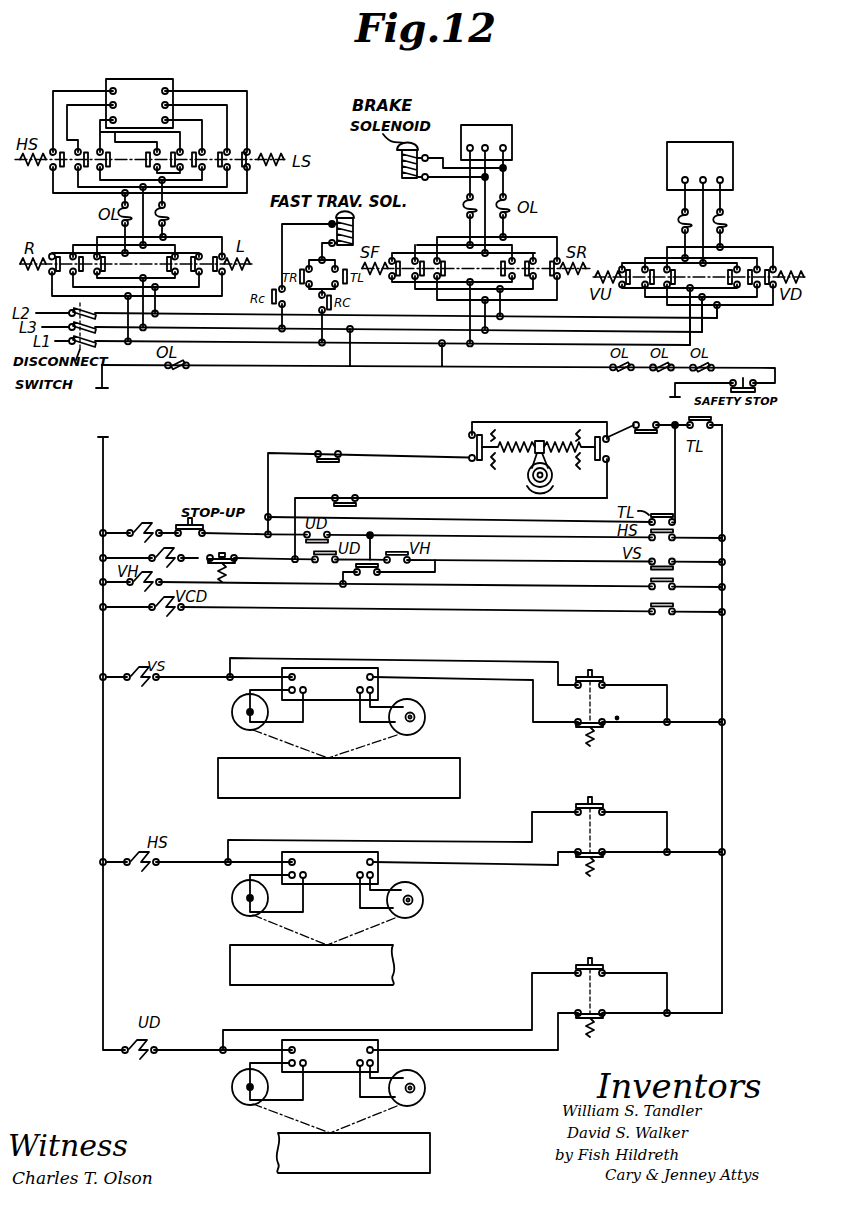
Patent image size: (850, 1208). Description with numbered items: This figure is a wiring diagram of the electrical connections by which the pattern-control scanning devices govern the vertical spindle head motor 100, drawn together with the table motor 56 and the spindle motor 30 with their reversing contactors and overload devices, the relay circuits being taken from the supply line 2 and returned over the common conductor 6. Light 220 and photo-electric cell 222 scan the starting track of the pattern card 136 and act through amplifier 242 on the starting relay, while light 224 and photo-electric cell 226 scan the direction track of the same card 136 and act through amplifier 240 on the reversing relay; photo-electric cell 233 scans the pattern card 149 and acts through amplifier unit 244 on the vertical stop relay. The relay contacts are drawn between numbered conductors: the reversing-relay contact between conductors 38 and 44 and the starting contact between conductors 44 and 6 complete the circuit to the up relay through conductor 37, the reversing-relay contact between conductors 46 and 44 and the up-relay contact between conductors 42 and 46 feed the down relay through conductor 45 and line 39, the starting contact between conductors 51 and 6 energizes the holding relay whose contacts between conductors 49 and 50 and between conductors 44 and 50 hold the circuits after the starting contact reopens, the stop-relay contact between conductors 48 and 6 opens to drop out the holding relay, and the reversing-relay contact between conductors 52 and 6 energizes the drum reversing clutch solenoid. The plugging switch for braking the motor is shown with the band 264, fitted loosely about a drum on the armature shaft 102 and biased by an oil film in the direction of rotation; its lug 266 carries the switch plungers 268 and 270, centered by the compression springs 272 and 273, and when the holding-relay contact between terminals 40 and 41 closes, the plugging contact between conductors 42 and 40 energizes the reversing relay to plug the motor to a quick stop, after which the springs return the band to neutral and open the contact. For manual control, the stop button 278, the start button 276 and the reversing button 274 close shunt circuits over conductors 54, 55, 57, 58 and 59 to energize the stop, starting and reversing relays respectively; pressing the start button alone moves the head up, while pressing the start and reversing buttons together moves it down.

The electric motor 56 is at (137, 80).
The electric motor 30 is at (487, 130).
The electric motor 100 is at (707, 150).
The lug 266 is at (533, 422).
The compression spring 272 is at (517, 440).
The switch plunger 268 is at (492, 440).
The switch plunger 270 is at (592, 440).
The compression spring 273 is at (566, 437).
The band 264 is at (527, 484).
The armature shaft 102 is at (553, 481).
The contact terminal 40 is at (614, 432).
The contact terminal 41 is at (675, 425).
The conductor 6 is at (707, 708).
The supply conductor 2 is at (111, 744).
The VU switch contact 37 is at (153, 523).
The conductor 38 is at (236, 528).
The conductor with VD contact 39 is at (417, 460).
The conductor 42 is at (417, 504).
The conductor 44 is at (482, 550).
The VD switch contact 45 is at (175, 556).
The conductor 46 is at (251, 562).
The conductor 48 is at (543, 556).
The conductor 49 is at (405, 592).
The conductor 50 is at (401, 572).
The conductor 51 is at (624, 581).
The conductor 52 is at (451, 605).
The conductor 54 is at (367, 665).
The conductor 55 is at (475, 699).
The pinion 57 is at (475, 848).
The armature shaft 58 is at (366, 1003).
The large gear 59 is at (475, 1021).
The photo-electric cell 233 is at (236, 719).
The amplifier unit 244 is at (330, 684).
The pattern card 149 is at (339, 778).
The stop button 278 is at (591, 677).
The start button 276 is at (591, 804).
The reversing button 274 is at (591, 965).
The amplifier 242 is at (330, 868).
The photo-electric cell 222 is at (236, 909).
The light 220 is at (421, 909).
The pattern card 136 is at (330, 1059).
The amplifier 240 is at (330, 1056).
The photo-electric cell 226 is at (236, 1099).
The light 224 is at (421, 1098).